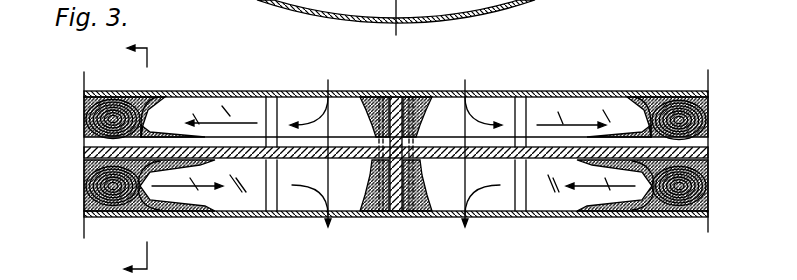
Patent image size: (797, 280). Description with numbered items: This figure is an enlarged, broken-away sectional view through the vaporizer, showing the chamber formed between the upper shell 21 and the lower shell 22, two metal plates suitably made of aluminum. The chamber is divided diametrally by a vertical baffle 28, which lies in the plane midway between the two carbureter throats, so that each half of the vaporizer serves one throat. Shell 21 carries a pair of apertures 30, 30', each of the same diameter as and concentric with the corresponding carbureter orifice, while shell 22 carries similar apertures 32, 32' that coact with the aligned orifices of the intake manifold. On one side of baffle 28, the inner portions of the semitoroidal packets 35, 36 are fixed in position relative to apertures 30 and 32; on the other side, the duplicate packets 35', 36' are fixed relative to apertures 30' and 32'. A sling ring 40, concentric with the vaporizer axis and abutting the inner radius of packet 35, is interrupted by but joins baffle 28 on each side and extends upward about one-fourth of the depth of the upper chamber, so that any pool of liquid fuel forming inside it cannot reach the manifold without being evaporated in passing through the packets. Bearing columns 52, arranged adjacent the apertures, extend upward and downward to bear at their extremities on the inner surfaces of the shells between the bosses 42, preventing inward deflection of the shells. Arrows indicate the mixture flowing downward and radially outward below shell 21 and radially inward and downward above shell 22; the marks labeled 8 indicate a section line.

The shell 21 is at (203, 94).
The shell 22 is at (303, 7).
The vertical baffle 28 is at (397, 97).
The aperture 30 is at (329, 94).
The aperture 30' is at (468, 94).
The aperture 32 is at (311, 166).
The aperture 32' is at (482, 166).
The packet 35 is at (84, 119).
The packet 35' is at (705, 120).
The packet 36 is at (84, 186).
The packet 36' is at (705, 186).
The sling ring 40 is at (141, 135).
The bosses 42 is at (389, 205).
The bearing columns 52 is at (271, 110).
The section line 8- 8 is at (123, 158).